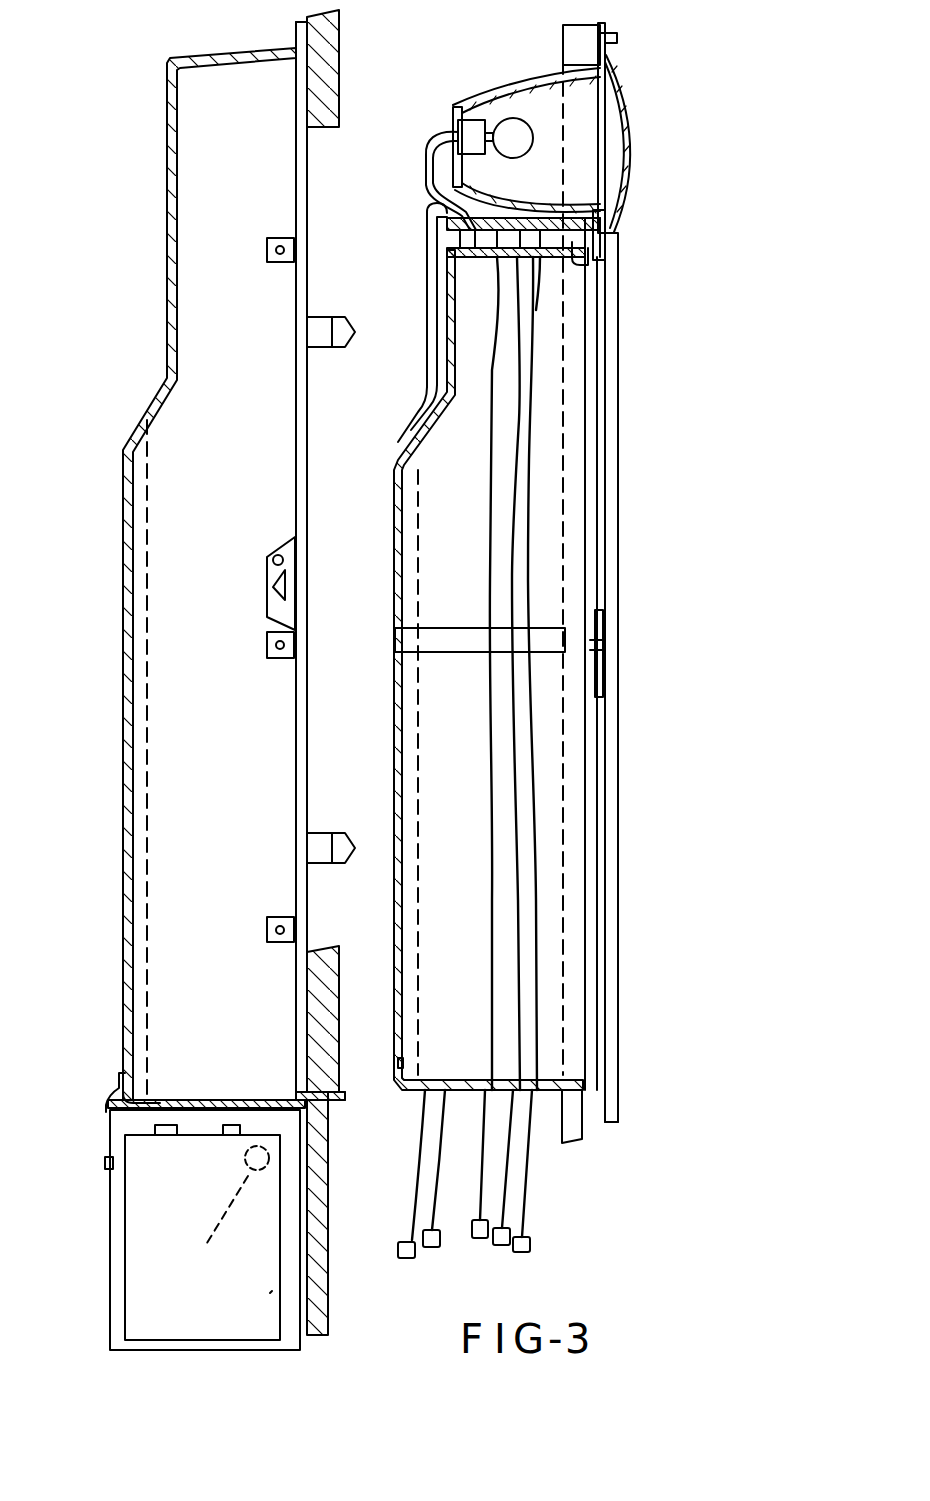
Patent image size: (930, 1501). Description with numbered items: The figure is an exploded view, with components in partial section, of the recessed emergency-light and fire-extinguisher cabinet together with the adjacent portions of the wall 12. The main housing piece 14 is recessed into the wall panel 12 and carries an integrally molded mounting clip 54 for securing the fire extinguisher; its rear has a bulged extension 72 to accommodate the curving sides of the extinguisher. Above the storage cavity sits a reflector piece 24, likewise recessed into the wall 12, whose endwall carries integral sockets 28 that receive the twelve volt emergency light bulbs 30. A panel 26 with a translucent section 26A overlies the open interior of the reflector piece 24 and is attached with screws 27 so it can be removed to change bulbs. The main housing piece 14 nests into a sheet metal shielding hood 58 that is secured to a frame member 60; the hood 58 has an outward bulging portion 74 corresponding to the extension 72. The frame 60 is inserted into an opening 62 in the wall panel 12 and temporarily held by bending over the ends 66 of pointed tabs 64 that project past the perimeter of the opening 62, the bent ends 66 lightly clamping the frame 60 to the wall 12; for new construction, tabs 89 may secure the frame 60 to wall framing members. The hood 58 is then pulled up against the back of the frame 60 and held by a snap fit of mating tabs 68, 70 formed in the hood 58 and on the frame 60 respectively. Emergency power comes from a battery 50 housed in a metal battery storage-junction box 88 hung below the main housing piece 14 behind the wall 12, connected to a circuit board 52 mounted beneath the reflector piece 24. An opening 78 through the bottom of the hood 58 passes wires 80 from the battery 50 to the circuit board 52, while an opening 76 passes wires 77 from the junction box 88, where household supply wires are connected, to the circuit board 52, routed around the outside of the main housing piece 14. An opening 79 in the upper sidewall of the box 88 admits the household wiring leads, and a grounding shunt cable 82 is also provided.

The wall panel 12 is at (345, 70).
The main housing piece 14 is at (409, 424).
The reflector piece 24 is at (495, 58).
The panel 26 is at (626, 108).
The translucent section 26A is at (630, 170).
The screws 27 is at (570, 258).
The sockets 28 is at (454, 108).
The emergency light bulbs 30 is at (512, 120).
The battery 50 is at (272, 1292).
The circuit board 52 is at (458, 197).
The mounting clip 54 is at (452, 628).
The sheet metal shielding hood 58 is at (166, 160).
The frame member 60 is at (300, 20).
The opening 62 is at (318, 1090).
The pointed tabs 64 is at (322, 315).
The ends 66 is at (337, 1100).
The mating tab 68 is at (255, 563).
The mating tab 70 is at (266, 582).
The bulged extension 72 is at (398, 467).
The outward bulging portion 74 is at (127, 447).
The opening 76 is at (157, 1100).
The wires 77 is at (485, 1168).
The opening 78 is at (222, 1108).
The opening 79 is at (228, 1225).
The wires 80 is at (405, 1200).
The grounding shunt cable 82 is at (118, 1092).
The battery storage-junction box 88 is at (104, 1245).
The tabs 89 is at (275, 238).